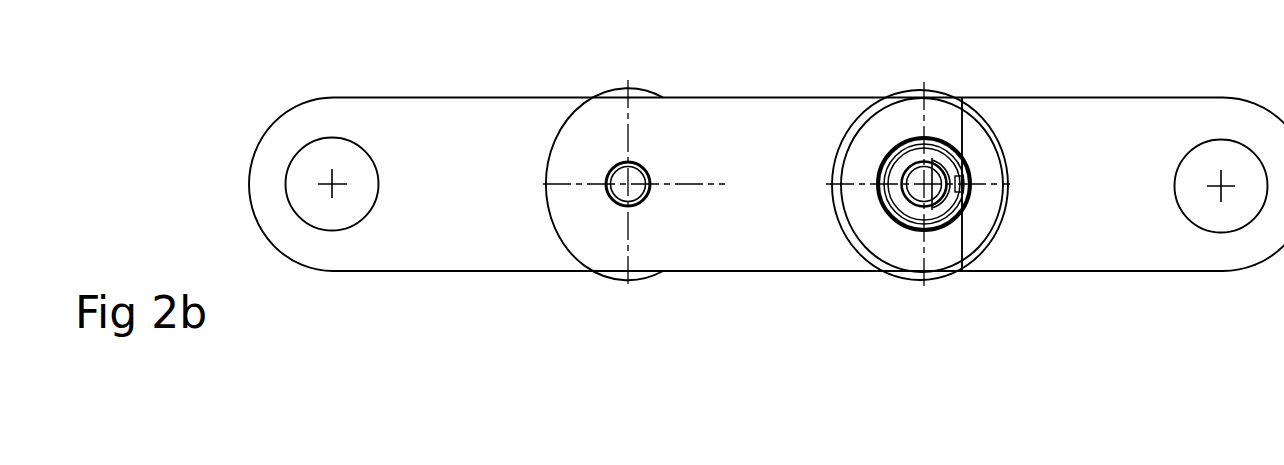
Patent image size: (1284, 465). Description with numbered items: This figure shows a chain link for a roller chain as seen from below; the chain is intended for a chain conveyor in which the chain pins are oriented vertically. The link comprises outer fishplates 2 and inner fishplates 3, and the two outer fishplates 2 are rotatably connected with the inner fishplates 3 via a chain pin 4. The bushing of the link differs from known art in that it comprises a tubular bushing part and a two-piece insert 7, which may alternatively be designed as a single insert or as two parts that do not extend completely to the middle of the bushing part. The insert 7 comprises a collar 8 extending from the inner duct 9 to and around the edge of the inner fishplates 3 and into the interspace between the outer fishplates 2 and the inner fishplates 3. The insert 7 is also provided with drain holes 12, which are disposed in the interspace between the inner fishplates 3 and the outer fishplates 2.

The outer fishplate 2 is at (733, 258).
The inner fishplate 3 is at (532, 252).
The chain pin 4 is at (638, 194).
The two-piece insert 7 is at (892, 127).
The collar 8 is at (900, 90).
The inner duct 9 is at (967, 162).
The drain holes 12 is at (972, 203).